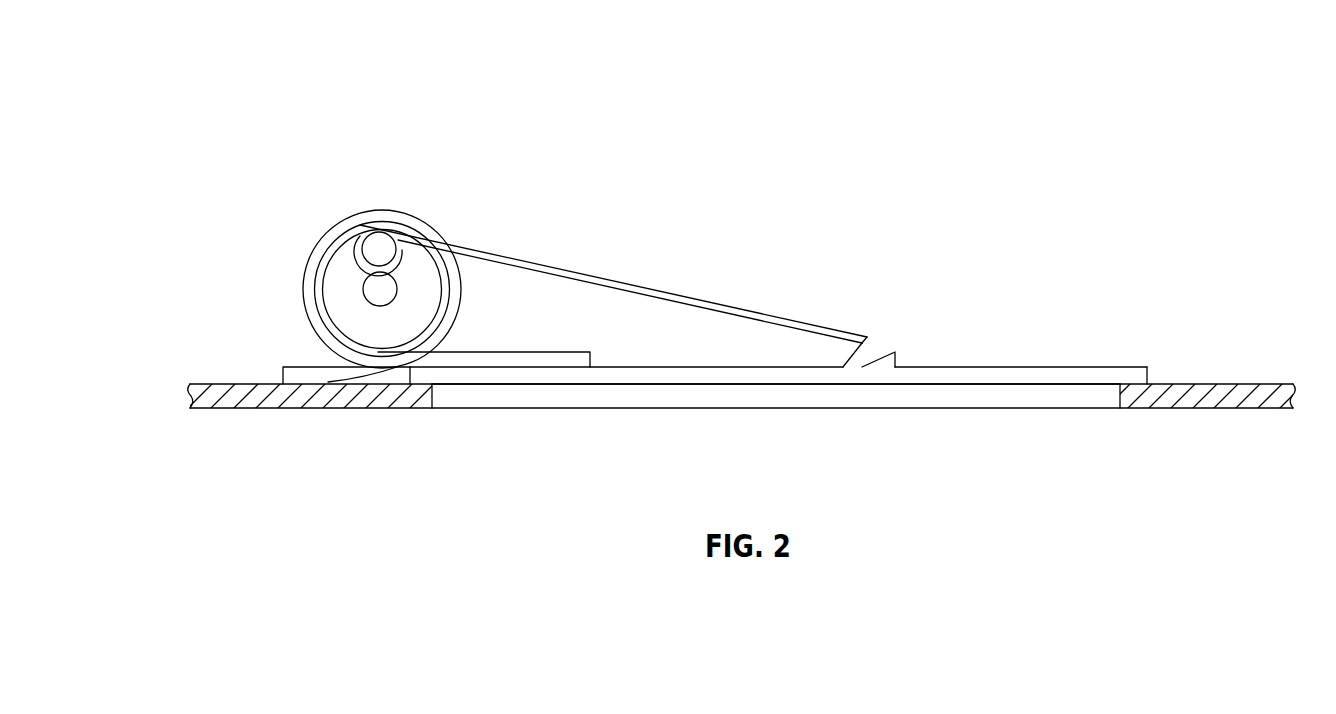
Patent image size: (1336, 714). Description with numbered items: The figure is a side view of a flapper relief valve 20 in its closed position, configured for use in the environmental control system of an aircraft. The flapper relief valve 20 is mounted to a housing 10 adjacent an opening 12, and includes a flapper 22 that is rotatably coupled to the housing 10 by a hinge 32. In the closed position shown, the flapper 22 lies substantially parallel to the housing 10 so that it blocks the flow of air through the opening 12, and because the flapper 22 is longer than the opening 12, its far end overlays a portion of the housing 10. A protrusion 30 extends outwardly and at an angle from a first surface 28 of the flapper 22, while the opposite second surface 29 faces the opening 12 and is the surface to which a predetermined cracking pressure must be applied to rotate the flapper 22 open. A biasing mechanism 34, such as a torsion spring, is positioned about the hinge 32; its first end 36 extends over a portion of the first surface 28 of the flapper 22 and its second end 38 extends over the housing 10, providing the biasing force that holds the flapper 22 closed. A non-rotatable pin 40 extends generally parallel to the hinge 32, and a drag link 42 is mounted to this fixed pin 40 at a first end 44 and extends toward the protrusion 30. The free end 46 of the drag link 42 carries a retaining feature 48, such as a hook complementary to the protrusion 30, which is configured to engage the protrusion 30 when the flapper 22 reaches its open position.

The housing 10 is at (268, 403).
The opening 12 is at (1102, 397).
The flapper relief valve 20 is at (178, 100).
The flapper 22 is at (1123, 366).
The first surface 28 is at (1053, 365).
The second surface 29 is at (983, 386).
The protrusion 30 is at (892, 352).
The hinge 32 is at (378, 287).
The biasing mechanism 34 is at (327, 232).
The first end of biasing mechanism 36 is at (567, 358).
The second end of biasing mechanism 38 is at (310, 373).
The non-rotatable pin 40 is at (378, 240).
The drag link 42 is at (615, 280).
The first end of drag link 44 is at (353, 238).
The free end of drag link 46 is at (840, 328).
The retaining feature 48 is at (843, 354).